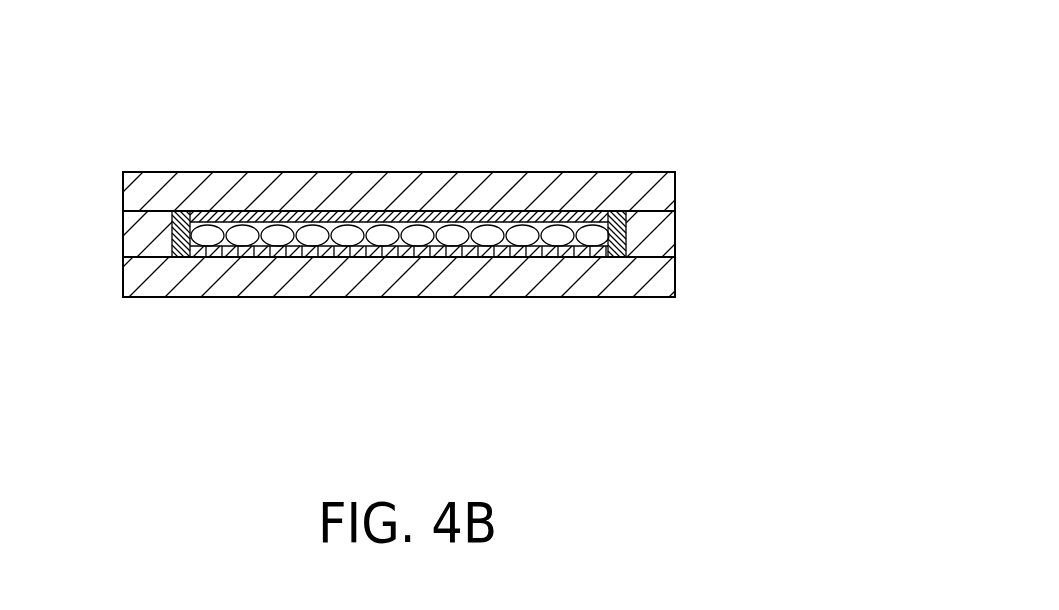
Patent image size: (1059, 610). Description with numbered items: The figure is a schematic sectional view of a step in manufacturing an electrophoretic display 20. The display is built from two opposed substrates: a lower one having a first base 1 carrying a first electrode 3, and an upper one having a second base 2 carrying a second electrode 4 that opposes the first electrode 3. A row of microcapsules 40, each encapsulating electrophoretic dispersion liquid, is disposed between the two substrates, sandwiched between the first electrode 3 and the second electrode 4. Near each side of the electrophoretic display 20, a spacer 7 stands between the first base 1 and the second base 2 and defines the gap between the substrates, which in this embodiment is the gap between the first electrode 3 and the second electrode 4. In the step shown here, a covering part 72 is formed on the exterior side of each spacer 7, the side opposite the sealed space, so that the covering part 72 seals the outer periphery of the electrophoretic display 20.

The electrophoretic display 20 is at (717, 133).
The second base 2 is at (663, 190).
The first base 1 is at (665, 282).
The covering part 72 is at (143, 242).
The spacer 7 is at (173, 258).
The second electrode 4 is at (563, 217).
The first electrode 3 is at (543, 253).
The microcapsules 40 is at (277, 233).